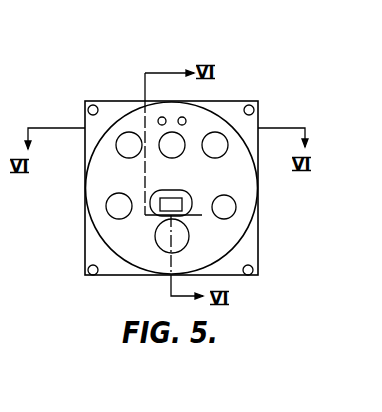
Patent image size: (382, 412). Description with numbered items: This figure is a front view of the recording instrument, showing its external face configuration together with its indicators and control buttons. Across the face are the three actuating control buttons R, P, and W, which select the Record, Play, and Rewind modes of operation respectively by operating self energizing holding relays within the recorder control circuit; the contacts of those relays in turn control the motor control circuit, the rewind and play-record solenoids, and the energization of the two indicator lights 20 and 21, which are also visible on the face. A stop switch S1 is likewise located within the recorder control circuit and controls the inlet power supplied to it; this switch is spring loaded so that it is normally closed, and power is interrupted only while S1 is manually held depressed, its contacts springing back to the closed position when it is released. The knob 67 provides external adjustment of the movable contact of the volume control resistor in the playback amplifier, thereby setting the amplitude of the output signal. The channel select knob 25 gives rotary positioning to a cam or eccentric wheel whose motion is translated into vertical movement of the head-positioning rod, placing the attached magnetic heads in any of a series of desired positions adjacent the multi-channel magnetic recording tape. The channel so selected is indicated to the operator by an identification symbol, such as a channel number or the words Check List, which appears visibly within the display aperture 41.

The indicator light 20 is at (160, 118).
The indicator light 21 is at (180, 118).
The actuating control button P is at (127, 142).
The actuating control button R is at (170, 142).
The actuating control button W is at (213, 142).
The stop switch S1 is at (117, 203).
The knob 67 is at (222, 204).
The display aperture 41 is at (199, 168).
The channel select knob 25 is at (162, 233).